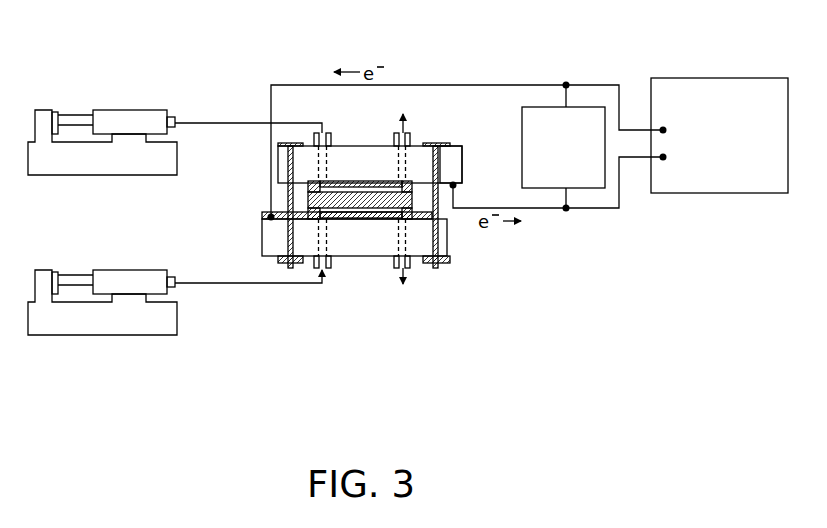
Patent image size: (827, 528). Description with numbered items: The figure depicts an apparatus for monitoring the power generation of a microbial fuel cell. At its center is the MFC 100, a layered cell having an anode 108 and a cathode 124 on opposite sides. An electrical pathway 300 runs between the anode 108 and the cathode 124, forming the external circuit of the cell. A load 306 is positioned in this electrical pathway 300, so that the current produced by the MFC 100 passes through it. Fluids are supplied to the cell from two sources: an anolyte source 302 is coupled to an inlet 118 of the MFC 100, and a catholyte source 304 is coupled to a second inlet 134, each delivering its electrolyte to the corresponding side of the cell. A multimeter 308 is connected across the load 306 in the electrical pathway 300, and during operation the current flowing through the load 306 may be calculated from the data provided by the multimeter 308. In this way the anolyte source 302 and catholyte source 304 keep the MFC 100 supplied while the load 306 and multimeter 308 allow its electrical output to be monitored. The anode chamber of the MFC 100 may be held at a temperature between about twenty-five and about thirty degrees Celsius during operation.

The MFC 100 is at (345, 207).
The anode 108 is at (457, 186).
The inlet 118 is at (324, 130).
The cathode 124 is at (262, 225).
The inlet 134 is at (328, 268).
The electrical pathway 300 is at (459, 83).
The anolyte source 302 is at (158, 102).
The catholyte source 304 is at (128, 346).
The load 306 is at (583, 168).
The multimeter 308 is at (739, 140).